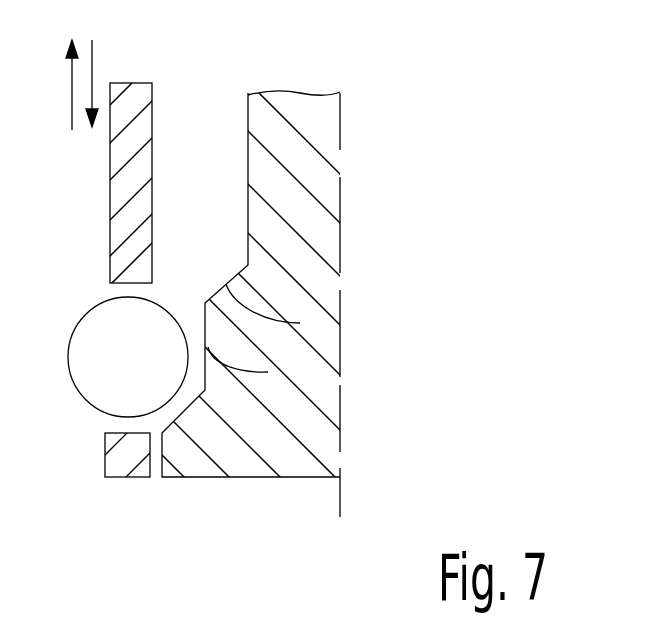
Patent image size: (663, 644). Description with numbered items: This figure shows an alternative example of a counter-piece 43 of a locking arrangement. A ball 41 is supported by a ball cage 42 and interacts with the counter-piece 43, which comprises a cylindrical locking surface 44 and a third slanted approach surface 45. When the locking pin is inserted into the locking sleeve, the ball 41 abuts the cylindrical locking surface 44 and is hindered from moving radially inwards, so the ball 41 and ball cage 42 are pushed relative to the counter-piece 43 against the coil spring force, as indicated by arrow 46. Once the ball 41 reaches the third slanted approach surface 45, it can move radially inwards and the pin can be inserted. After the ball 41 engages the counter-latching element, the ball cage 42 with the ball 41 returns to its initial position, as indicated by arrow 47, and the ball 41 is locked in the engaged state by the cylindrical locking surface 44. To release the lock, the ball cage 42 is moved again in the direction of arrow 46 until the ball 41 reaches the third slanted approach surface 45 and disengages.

The ball 41 is at (152, 385).
The ball cage 42 is at (118, 187).
The counter-piece 43 is at (308, 215).
The cylindrical locking surface 44 is at (268, 372).
The third slanted approach surface 45 is at (300, 323).
The arrow 46 is at (70, 74).
The arrow 47 is at (93, 62).